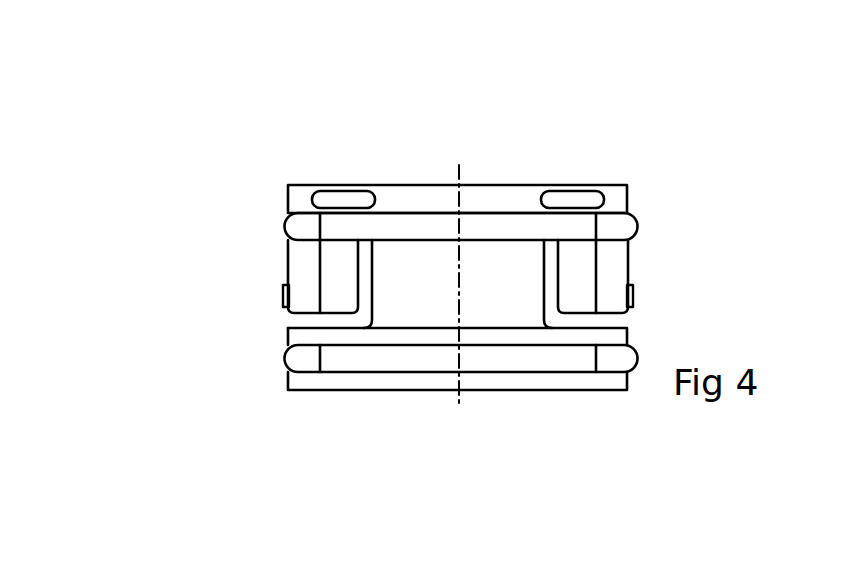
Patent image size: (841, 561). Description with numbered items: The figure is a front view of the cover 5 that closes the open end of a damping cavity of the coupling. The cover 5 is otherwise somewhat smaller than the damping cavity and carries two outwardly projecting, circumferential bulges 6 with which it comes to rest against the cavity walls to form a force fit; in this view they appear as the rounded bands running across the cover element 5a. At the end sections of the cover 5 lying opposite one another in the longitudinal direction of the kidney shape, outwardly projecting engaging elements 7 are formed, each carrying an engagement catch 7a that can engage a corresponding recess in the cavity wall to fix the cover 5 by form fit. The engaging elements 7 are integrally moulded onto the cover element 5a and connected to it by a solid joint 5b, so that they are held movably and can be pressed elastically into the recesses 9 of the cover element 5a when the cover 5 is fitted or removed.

The cover 5 is at (402, 155).
The cover element 5a is at (450, 303).
The solid joint 5b is at (300, 197).
The circumferential bulge 6 is at (287, 223).
The engaging element 7 is at (290, 262).
The engagement catch 7a is at (285, 298).
The recess 9 is at (357, 312).